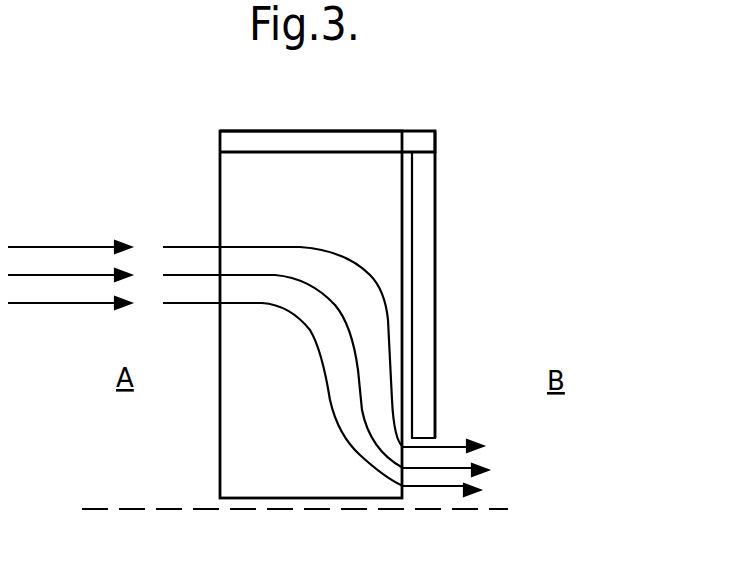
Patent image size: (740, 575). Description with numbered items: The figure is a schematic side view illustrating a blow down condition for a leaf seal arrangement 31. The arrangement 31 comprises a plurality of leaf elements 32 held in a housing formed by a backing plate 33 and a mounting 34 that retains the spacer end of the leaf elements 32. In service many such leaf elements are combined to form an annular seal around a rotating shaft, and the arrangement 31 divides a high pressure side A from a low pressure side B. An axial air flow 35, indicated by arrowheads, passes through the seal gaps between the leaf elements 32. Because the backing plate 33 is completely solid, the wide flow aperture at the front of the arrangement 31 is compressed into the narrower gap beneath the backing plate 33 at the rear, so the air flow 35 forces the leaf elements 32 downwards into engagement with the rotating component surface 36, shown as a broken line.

The leaf seal arrangement 31 is at (471, 212).
The leaf elements 32 is at (248, 430).
The backing plate 33 is at (420, 351).
The mounting 34 is at (314, 136).
The air flow 35 is at (100, 246).
The rotating component surface 36 is at (497, 510).